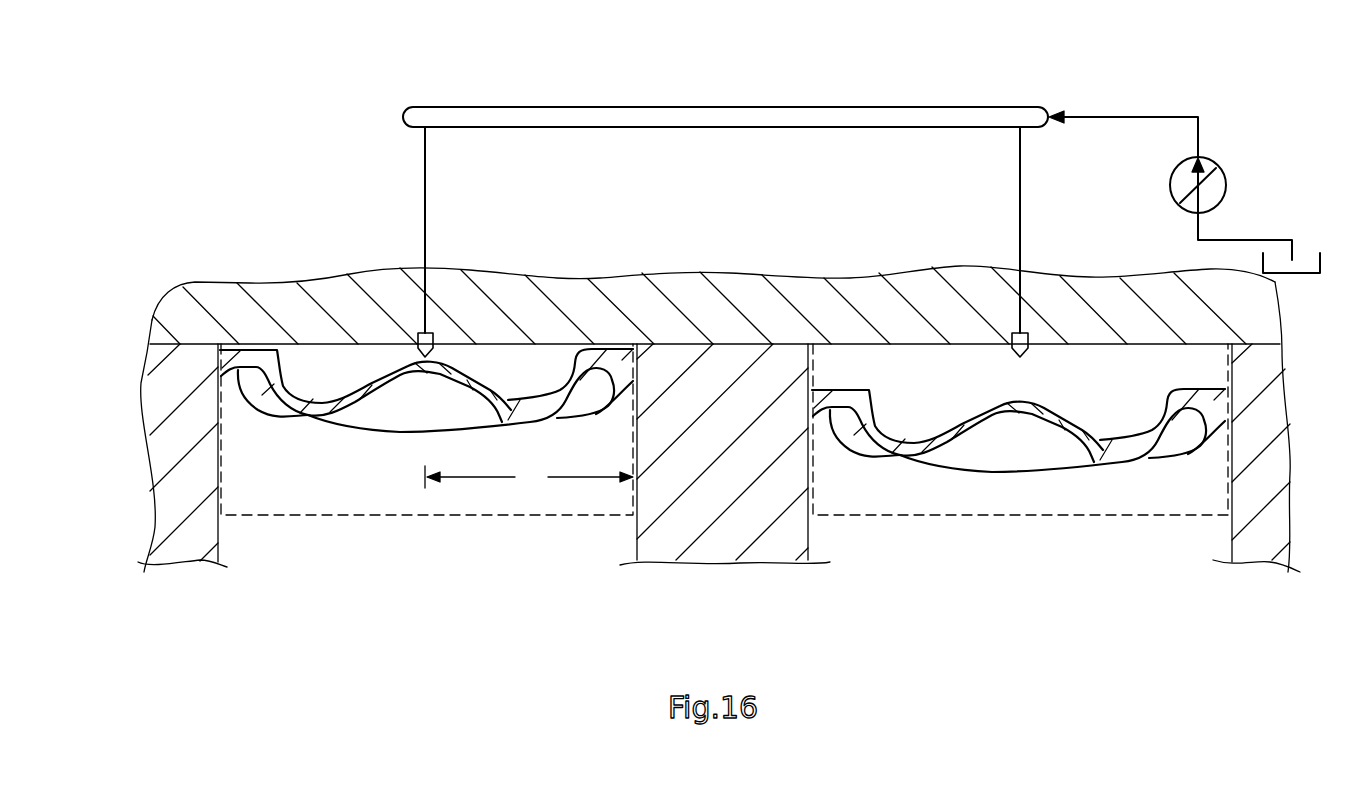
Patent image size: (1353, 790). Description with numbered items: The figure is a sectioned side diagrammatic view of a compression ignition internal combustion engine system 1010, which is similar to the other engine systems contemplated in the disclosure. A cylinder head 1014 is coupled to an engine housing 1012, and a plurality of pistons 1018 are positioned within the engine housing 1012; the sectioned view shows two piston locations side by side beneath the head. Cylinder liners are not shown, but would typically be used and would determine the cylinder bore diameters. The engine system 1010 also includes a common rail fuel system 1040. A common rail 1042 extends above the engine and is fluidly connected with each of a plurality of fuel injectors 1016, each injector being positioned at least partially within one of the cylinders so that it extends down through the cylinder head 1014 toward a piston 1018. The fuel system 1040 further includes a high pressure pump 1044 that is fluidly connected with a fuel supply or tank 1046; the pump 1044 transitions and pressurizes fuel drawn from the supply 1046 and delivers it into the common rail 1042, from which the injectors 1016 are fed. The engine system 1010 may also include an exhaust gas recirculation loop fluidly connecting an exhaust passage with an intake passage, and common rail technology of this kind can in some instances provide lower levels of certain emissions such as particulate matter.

The engine system 1010 is at (283, 153).
The engine housing 1012 is at (157, 447).
The cylinder head 1014 is at (160, 297).
The fuel injectors 1016 is at (430, 332).
The pistons 1018 is at (424, 518).
The fuel system 1040 is at (1232, 115).
The common rail 1042 is at (721, 130).
The high pressure pump 1044 is at (1170, 182).
The fuel supply or tank 1046 is at (1262, 256).